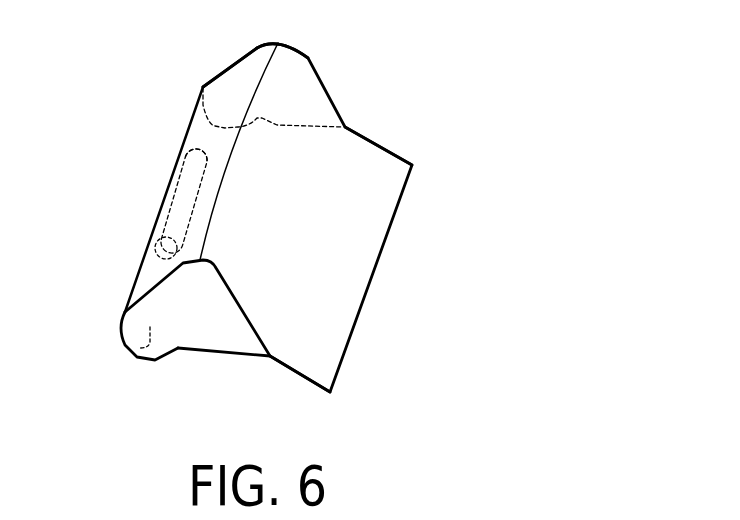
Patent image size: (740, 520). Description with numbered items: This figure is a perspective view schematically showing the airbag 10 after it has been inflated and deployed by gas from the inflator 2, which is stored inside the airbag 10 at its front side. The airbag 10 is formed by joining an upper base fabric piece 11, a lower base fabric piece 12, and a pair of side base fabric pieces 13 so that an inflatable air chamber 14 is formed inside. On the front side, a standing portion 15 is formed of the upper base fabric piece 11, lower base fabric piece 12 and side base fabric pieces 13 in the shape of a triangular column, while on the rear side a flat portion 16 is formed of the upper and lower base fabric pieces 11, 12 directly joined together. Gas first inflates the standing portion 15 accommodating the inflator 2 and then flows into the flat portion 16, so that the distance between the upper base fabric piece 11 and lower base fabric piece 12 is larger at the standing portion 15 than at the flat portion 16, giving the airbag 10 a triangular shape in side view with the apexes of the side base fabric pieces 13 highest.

The inflator 2 is at (180, 195).
The airbag 10 is at (388, 252).
The upper base fabric piece 11 is at (153, 273).
The lower base fabric piece 12 is at (213, 357).
The side base fabric pieces 13 is at (312, 70).
The air chamber 14 is at (230, 167).
The standing portion 15 is at (210, 66).
The flat portion 16 is at (388, 137).